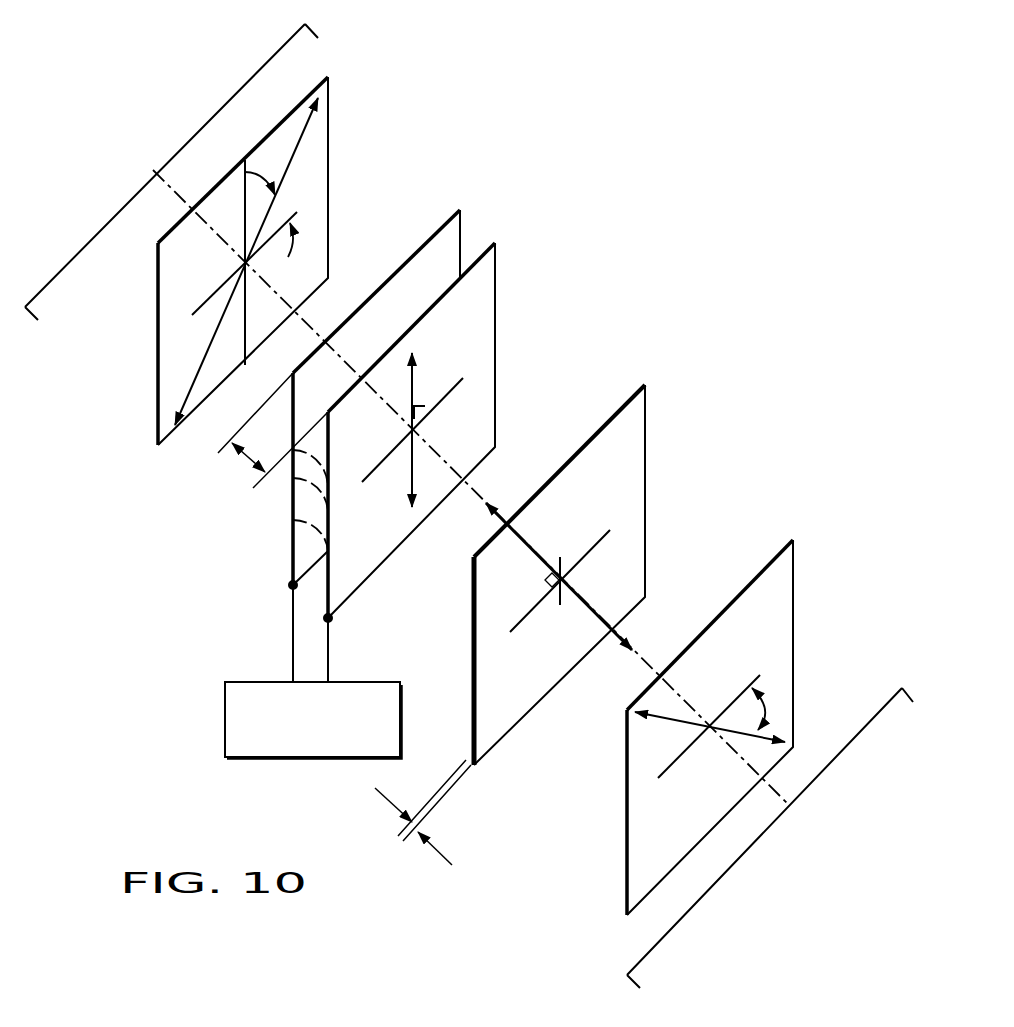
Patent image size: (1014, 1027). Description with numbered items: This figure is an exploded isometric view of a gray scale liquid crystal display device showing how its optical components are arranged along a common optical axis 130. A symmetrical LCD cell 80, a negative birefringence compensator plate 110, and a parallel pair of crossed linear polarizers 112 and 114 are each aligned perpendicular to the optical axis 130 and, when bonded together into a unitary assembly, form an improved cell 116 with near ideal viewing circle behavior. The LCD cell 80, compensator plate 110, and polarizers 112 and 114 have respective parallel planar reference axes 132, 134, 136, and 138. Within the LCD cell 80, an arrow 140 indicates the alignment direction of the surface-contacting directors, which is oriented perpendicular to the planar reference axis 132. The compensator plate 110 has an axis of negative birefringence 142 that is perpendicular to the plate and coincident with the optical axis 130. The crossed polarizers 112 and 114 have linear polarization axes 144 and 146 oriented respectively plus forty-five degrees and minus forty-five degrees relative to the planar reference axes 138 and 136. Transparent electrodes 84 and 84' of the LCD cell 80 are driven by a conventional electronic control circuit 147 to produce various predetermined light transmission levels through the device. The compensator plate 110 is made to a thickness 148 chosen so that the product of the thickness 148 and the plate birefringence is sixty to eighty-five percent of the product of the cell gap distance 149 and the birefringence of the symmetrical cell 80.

The LCD cell 80 is at (490, 217).
The transparent electrode 84 is at (458, 430).
The transparent electrode 84' is at (391, 368).
The negative birefringence compensator plate 110 is at (627, 437).
The crossed linear polarizer 112 is at (325, 105).
The crossed linear polarizer 114 is at (783, 587).
The improved cell 116 is at (688, 207).
The optical axis 130 is at (180, 193).
The planar reference axis 132 is at (440, 402).
The planar reference axis 134 is at (587, 553).
The planar reference axis 136 is at (730, 700).
The planar reference axis 138 is at (223, 283).
The arrow 140 is at (413, 387).
The axis of negative birefringence 142 is at (528, 547).
The linear polarization axis 144 is at (297, 150).
The linear polarization axis 146 is at (672, 718).
The electronic control circuit 147 is at (243, 682).
The thickness 148 is at (400, 840).
The cell gap distance 149 is at (243, 455).